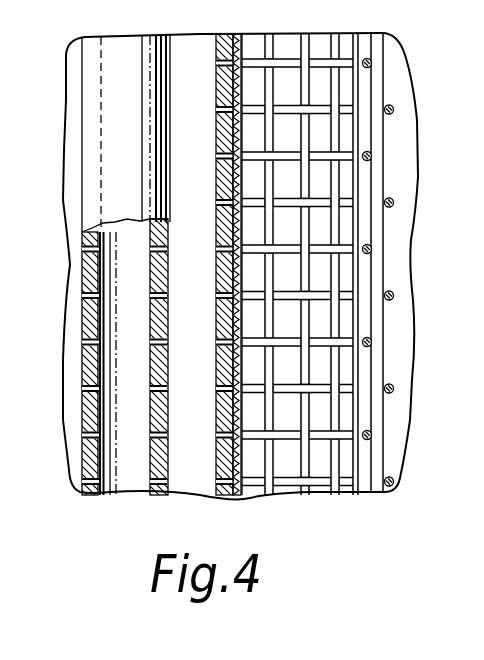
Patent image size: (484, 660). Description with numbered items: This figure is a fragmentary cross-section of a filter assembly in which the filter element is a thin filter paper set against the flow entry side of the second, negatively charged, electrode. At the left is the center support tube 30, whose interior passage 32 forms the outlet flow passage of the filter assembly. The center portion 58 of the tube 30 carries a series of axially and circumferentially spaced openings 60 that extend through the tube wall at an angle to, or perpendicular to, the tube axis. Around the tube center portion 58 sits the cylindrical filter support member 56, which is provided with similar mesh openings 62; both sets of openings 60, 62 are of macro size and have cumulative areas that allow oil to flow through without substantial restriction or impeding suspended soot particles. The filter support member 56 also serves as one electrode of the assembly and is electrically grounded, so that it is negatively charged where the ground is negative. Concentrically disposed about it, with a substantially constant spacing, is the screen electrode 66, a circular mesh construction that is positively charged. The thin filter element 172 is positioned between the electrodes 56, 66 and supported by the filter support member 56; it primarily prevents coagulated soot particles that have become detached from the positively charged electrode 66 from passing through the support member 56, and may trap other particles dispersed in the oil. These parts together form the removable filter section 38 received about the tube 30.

The center support tube 30 is at (82, 402).
The passage 32 is at (107, 458).
The removable filter section 38 is at (390, 156).
The cylindrical filter support member 56 is at (223, 270).
The center portion of support tube 58 is at (80, 318).
The openings 60 is at (80, 292).
The openings 62 is at (225, 155).
The screen electrode 66 is at (392, 106).
The thin filter element 172 is at (245, 448).